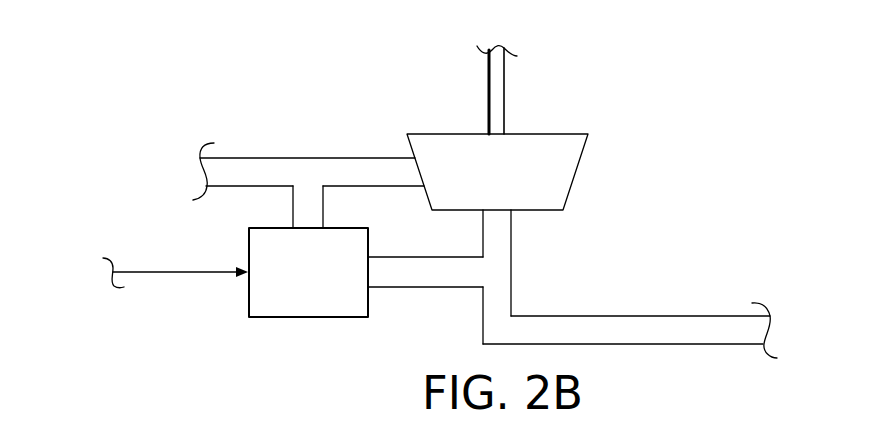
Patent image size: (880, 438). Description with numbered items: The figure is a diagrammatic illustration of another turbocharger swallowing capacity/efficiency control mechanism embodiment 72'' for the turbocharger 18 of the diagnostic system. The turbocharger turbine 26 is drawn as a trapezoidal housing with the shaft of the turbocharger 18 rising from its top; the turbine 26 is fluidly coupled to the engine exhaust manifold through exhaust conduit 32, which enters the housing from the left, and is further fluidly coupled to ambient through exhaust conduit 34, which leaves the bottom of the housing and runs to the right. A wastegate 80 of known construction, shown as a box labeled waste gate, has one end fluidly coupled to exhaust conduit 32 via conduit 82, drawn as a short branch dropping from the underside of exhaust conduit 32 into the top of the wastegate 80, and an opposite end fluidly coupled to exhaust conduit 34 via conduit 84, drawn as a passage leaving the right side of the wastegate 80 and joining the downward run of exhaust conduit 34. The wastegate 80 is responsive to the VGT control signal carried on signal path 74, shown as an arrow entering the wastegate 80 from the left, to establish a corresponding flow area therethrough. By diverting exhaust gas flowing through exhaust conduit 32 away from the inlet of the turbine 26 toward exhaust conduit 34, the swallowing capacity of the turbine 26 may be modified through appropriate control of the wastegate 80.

The turbocharger swallowing capacity/efficiency control mechanism embodiment 72'' is at (482, 208).
The turbocharger 18 is at (505, 117).
The turbocharger turbine 26 is at (580, 160).
The exhaust conduit 32 is at (302, 157).
The exhaust conduit 34 is at (628, 316).
The signal path 74 is at (196, 270).
The wastegate 80 is at (285, 318).
The conduit 82 is at (323, 197).
The conduit 84 is at (398, 289).